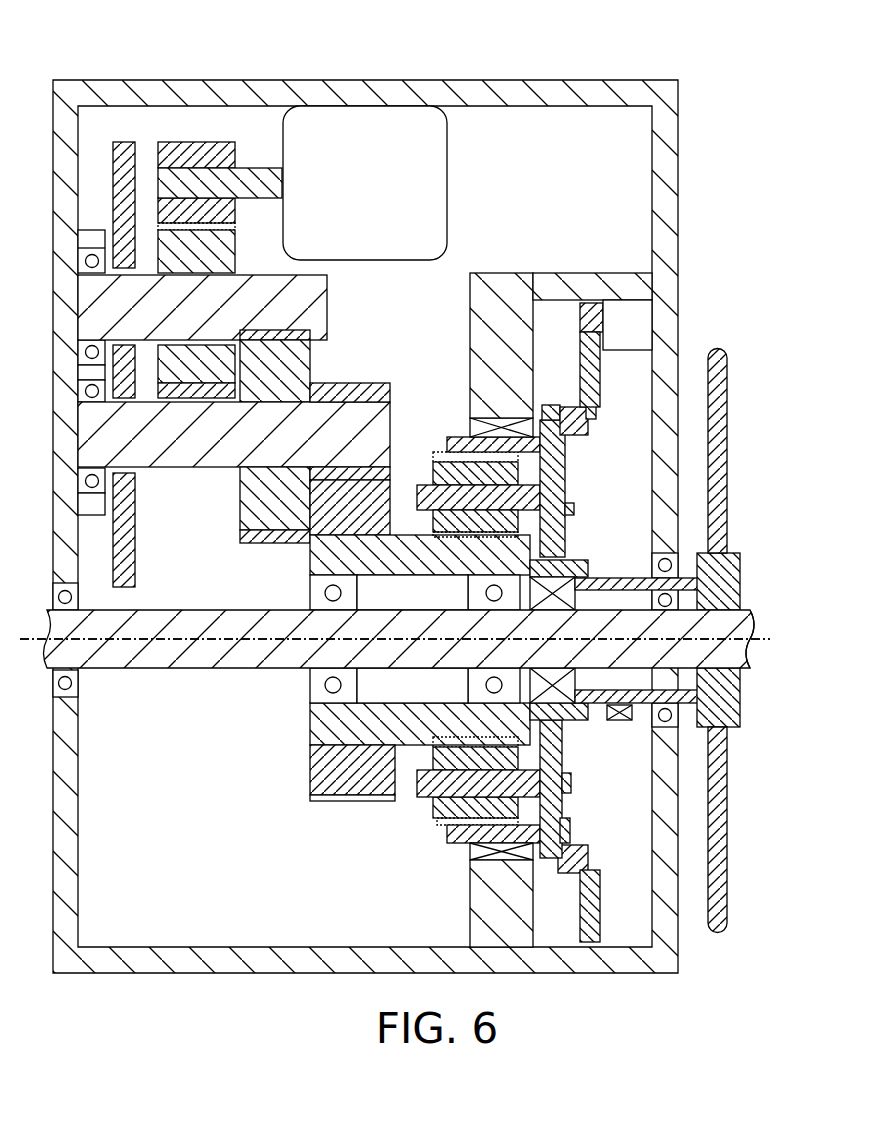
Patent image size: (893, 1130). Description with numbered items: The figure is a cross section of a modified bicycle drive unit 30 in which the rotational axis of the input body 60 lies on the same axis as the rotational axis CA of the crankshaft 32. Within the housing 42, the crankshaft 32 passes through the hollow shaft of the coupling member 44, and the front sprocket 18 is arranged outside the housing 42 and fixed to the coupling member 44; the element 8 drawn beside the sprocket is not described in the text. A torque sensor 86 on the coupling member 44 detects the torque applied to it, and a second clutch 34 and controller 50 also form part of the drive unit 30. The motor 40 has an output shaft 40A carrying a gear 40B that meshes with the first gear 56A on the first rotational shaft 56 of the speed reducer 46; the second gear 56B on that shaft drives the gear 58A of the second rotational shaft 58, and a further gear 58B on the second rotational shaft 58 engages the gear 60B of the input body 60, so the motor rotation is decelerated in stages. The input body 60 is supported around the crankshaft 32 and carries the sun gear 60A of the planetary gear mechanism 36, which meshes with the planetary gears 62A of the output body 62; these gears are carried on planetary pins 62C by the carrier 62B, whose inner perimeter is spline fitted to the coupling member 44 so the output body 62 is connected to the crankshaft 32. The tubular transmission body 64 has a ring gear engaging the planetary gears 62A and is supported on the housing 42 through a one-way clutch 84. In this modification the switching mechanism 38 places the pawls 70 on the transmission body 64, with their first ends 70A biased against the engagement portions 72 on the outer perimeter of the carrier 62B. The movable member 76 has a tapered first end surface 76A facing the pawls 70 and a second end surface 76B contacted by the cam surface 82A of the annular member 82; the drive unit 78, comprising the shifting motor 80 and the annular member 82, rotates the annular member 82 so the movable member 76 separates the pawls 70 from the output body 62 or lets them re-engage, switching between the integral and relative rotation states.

The crank arm 8 is at (742, 563).
The front sprocket 18 is at (727, 412).
The drive unit 30 is at (704, 53).
The crankshaft 32 is at (750, 655).
The second clutch 34 is at (524, 600).
The planetary gear mechanism 36 is at (440, 356).
The switching mechanism 38 is at (606, 466).
The motor 40 is at (447, 138).
The output shaft 40A is at (280, 190).
The gear 40B is at (173, 143).
The housing 42 is at (678, 136).
The coupling member 44 is at (635, 577).
The speed reducer 46 is at (183, 494).
The controller 50 is at (133, 563).
The first rotational shaft 56 is at (327, 295).
The first gear 56A is at (218, 227).
The second gear 56B is at (267, 273).
The second rotational shaft 58 is at (217, 467).
The gear 58A is at (250, 537).
The gear 58B is at (358, 383).
The input body 60 is at (310, 718).
The sun gear 60A is at (548, 542).
The gear 60B is at (320, 800).
The output body 62 is at (440, 827).
The planetary gears 62A is at (447, 843).
The carrier 62B is at (565, 523).
The planetary pins 62C is at (436, 483).
The transmission body 64 is at (457, 435).
The pawls 70 is at (565, 468).
The first end 70A is at (567, 493).
The engagement portions 72 is at (570, 787).
The movable member 76 is at (588, 437).
The first end surface 76A is at (572, 407).
The second end surface 76B is at (590, 412).
The drive unit 78 is at (697, 322).
The shifting motor 80 is at (653, 305).
The annular member 82 is at (602, 377).
The cam surface 82A is at (448, 442).
The one-way clutch 84 is at (463, 427).
The torque sensor 86 is at (620, 720).
The rotational axis CA is at (147, 642).